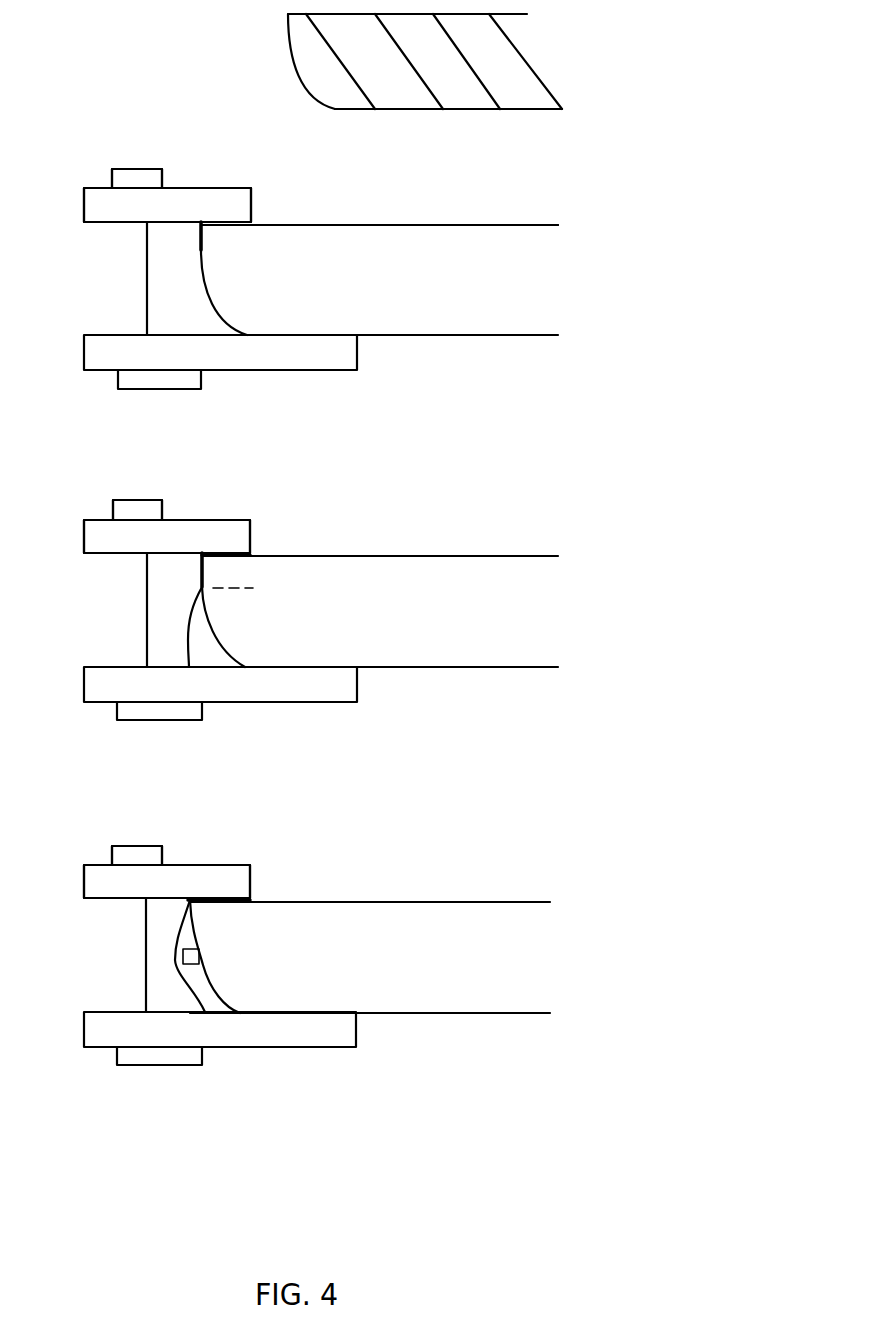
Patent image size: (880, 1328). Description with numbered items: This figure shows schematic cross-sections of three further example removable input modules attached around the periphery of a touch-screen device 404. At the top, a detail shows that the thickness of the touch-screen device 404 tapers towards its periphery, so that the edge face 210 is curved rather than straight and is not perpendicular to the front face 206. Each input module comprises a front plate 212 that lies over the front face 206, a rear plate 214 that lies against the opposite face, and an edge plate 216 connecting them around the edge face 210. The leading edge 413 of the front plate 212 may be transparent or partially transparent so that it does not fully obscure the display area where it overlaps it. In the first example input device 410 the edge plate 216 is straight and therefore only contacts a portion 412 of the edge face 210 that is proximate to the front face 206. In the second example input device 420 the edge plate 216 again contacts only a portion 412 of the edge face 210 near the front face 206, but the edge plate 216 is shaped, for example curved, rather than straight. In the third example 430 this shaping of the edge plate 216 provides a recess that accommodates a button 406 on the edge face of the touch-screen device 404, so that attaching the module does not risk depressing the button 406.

The edge face 210 is at (283, 51).
The touch-screen device 404 is at (375, 513).
The front face 206 is at (328, 225).
The first example input device 410 is at (77, 201).
The second example input device 420 is at (72, 516).
The third example 430 is at (77, 868).
The front plate 212 is at (167, 533).
The rear plate 214 is at (220, 700).
The edge plate 216 is at (196, 617).
The leading edge 413 is at (233, 187).
The portion 412 is at (222, 227).
The button 406 is at (183, 956).